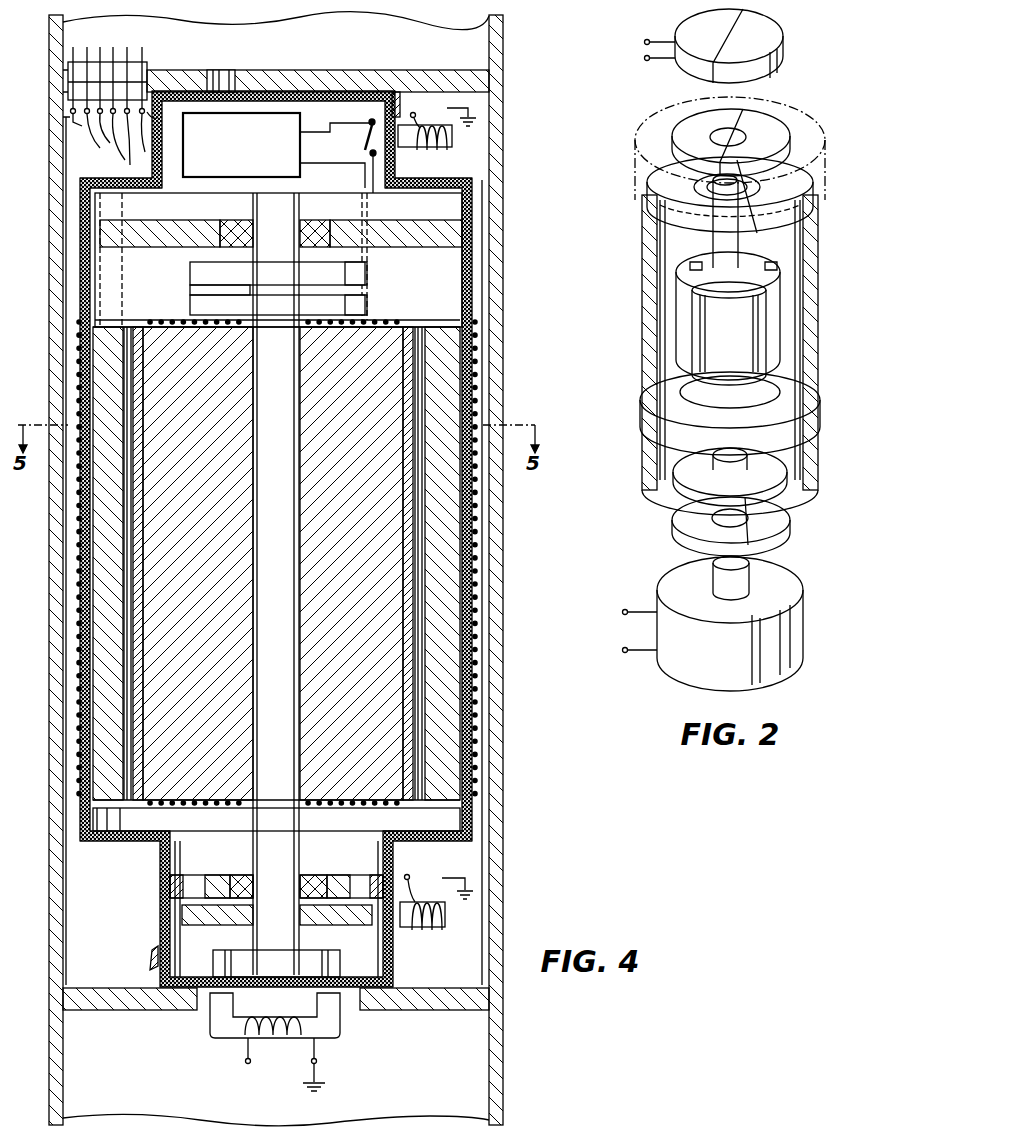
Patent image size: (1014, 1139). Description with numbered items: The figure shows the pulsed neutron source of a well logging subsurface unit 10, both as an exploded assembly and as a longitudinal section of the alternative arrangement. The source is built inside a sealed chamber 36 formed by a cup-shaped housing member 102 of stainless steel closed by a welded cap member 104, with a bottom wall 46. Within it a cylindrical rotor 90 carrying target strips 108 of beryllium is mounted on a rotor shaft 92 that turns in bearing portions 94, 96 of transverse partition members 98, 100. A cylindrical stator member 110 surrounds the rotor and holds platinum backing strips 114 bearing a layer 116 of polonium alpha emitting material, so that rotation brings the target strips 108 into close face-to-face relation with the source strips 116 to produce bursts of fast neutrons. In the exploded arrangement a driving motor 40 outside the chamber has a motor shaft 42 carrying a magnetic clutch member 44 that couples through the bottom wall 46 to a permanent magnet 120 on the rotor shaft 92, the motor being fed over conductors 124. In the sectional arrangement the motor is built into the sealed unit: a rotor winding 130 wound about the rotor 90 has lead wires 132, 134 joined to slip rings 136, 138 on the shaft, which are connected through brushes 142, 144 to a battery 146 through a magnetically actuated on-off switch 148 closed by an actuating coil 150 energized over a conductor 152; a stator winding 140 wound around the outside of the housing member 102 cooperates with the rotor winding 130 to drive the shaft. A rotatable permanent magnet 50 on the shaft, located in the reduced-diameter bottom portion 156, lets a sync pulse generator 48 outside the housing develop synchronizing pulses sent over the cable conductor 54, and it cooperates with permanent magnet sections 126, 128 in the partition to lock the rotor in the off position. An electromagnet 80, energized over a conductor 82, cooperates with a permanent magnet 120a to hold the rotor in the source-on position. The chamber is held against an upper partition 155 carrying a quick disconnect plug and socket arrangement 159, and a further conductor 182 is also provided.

In FIG. 4, the subsurface unit 10 is at (505, 126).
In FIG. 4, the sealed chamber 36 is at (479, 608).
In FIG. 2, the sealed chamber 36 is at (815, 362).
In FIG. 2, the driving motor 40 is at (795, 640).
In FIG. 2, the motor shaft 42 is at (767, 584).
In FIG. 2, the magnetic clutch member 44 is at (790, 542).
In FIG. 2, the bottom wall 46 is at (813, 492).
In FIG. 4, the sync pulse generator 48 is at (428, 932).
In FIG. 4, the rotatable permanent magnet 50 is at (338, 922).
In FIG. 2, the rotatable permanent magnet 50 is at (765, 128).
In FIG. 4, the cable conductor 54 is at (407, 875).
In FIG. 4, the electromagnet 80 is at (290, 1040).
In FIG. 2, the electromagnet 80 is at (778, 38).
In FIG. 4, the conductor 82 is at (209, 1065).
In FIG. 4, the cylindrical rotor 90 is at (400, 373).
In FIG. 2, the cylindrical rotor 90 is at (778, 268).
In FIG. 4, the rotor shaft 92 is at (297, 209).
In FIG. 2, the rotor shaft 92 is at (770, 245).
In FIG. 4, the bearing portion 94 is at (240, 878).
In FIG. 4, the bearing portion 96 is at (234, 220).
In FIG. 2, the bearing portion 96 is at (792, 166).
In FIG. 4, the transverse partition member 98 is at (345, 878).
In FIG. 4, the transverse partition member 100 is at (417, 247).
In FIG. 2, the transverse partition member 100 is at (805, 208).
In FIG. 4, the cup-shaped housing member 102 is at (478, 832).
In FIG. 2, the cup-shaped housing member 102 is at (798, 408).
In FIG. 4, the cap member 104 is at (462, 183).
In FIG. 2, the cap member 104 is at (660, 120).
In FIG. 4, the target strips 108 is at (140, 424).
In FIG. 2, the target strips 108 is at (770, 332).
In FIG. 4, the cylindrical stator member 110 is at (450, 523).
In FIG. 2, the cylindrical stator member 110 is at (805, 290).
In FIG. 4, the backing strip 114 is at (126, 543).
In FIG. 4, the alpha emitting material layer 116 is at (122, 486).
In FIG. 2, the alpha emitting material layer 116 is at (663, 264).
In FIG. 2, the permanent magnet 120 is at (778, 472).
In FIG. 4, the permanent magnet 120a is at (240, 958).
In FIG. 4, the conductors 124 is at (84, 130).
In FIG. 4, the permanent magnet section 126 is at (195, 878).
In FIG. 4, the permanent magnet section 128 is at (360, 878).
In FIG. 2, the permanent magnet section 128 is at (795, 188).
In FIG. 4, the rotor winding 130 is at (150, 320).
In FIG. 4, the lead wire 132 is at (203, 313).
In FIG. 4, the lead wire 134 is at (235, 318).
In FIG. 4, the slip ring 136 is at (200, 270).
In FIG. 4, the slip ring 138 is at (203, 306).
In FIG. 4, the stator winding 140 is at (480, 338).
In FIG. 4, the brush 142 is at (348, 270).
In FIG. 4, the brush 144 is at (355, 310).
In FIG. 4, the battery 146 is at (303, 123).
In FIG. 4, the magnetically actuated on-off switch 148 is at (364, 145).
In FIG. 4, the actuating coil 150 is at (438, 150).
In FIG. 4, the conductor 152 is at (274, 134).
In FIG. 4, the upper partition 155 is at (385, 76).
In FIG. 4, the bottom portion 156 is at (165, 893).
In FIG. 4, the quick disconnect plug and socket arrangement 159 is at (150, 66).
In FIG. 4, the conductor 182 is at (147, 138).